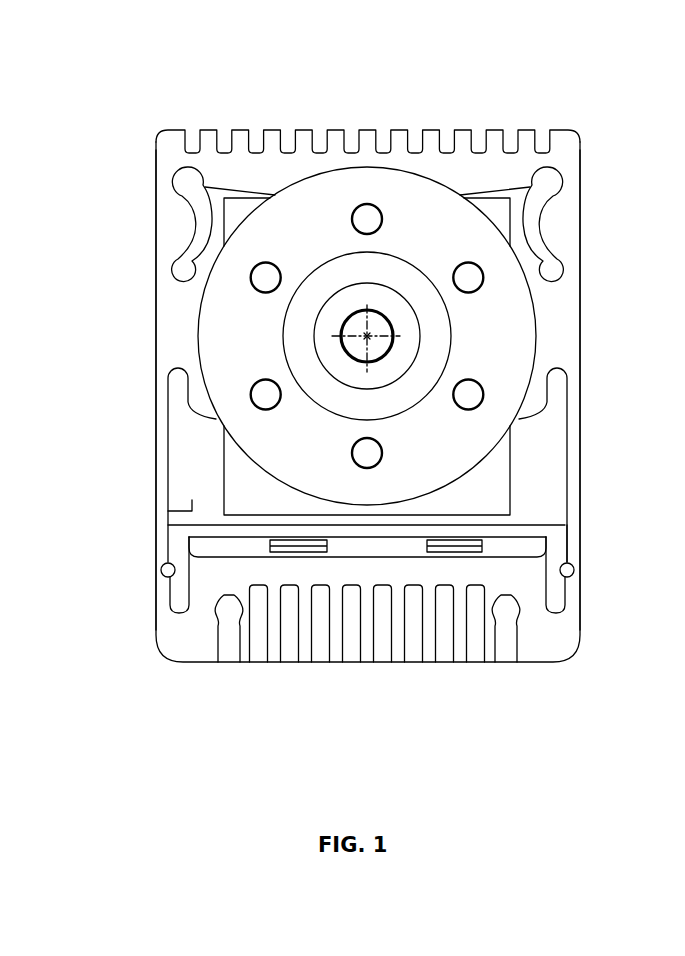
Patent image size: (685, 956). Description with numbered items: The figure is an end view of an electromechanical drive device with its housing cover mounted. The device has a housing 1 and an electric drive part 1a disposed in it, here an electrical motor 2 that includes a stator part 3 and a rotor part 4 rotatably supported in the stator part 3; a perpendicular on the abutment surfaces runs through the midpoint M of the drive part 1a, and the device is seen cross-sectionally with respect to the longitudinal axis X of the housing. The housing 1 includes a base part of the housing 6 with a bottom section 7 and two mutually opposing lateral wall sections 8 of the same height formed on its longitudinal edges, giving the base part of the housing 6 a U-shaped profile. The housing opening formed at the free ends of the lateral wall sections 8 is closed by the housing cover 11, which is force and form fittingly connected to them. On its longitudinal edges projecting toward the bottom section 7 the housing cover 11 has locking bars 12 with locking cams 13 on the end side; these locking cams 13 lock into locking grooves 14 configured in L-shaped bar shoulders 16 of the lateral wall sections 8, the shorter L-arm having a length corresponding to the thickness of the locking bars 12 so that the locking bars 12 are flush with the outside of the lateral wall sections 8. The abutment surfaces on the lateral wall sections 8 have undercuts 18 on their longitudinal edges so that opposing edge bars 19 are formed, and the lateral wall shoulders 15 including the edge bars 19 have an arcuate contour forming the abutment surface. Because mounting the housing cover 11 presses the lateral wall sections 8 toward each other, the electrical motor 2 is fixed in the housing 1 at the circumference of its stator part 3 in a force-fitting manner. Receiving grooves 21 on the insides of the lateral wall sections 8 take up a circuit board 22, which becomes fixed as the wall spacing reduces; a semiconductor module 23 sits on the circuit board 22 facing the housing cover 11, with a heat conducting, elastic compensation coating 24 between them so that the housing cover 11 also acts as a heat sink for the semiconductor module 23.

The housing 1 is at (137, 129).
The electric drive part 1a is at (458, 250).
The electrical motor 2 is at (467, 480).
The stator part 3 is at (500, 340).
The rotor part 4 is at (357, 330).
The midpoint of the drive device M is at (367, 335).
The longitudinal axis of the housing X is at (369, 338).
The base part of the housing 6 is at (555, 215).
The bottom section 7 is at (237, 172).
The lateral wall sections 8 is at (168, 392).
The housing cover 11 is at (337, 570).
The locking bars 12 is at (163, 597).
The locking cams 13 is at (165, 572).
The locking grooves 14 is at (190, 580).
The lateral wall shoulders 15 is at (172, 318).
The L-shaped bar shoulders 16 is at (550, 597).
The undercuts 18 is at (178, 262).
The edge bars 19 is at (210, 262).
The receiving grooves 21 is at (177, 523).
The circuit board 22 is at (377, 530).
The semiconductor module 23 is at (450, 543).
The compensation coating 24 is at (293, 555).